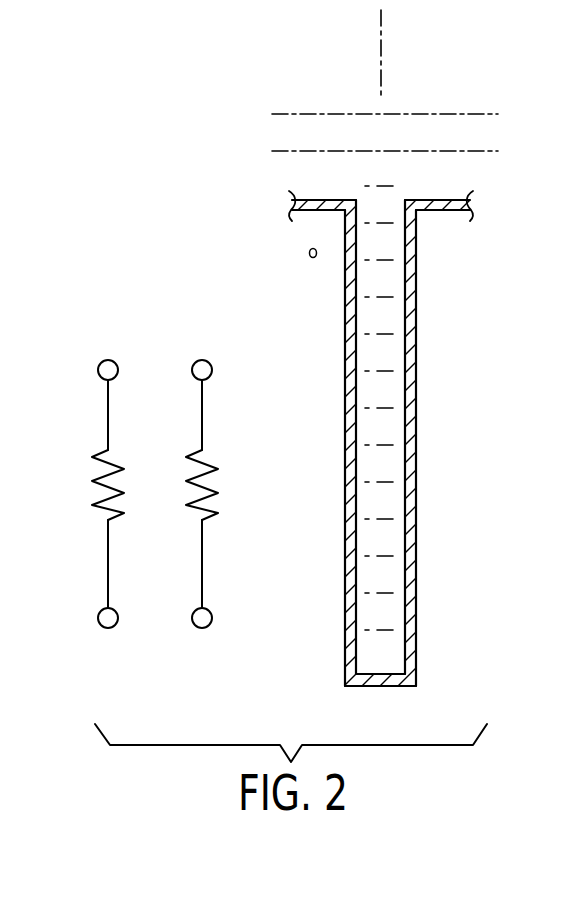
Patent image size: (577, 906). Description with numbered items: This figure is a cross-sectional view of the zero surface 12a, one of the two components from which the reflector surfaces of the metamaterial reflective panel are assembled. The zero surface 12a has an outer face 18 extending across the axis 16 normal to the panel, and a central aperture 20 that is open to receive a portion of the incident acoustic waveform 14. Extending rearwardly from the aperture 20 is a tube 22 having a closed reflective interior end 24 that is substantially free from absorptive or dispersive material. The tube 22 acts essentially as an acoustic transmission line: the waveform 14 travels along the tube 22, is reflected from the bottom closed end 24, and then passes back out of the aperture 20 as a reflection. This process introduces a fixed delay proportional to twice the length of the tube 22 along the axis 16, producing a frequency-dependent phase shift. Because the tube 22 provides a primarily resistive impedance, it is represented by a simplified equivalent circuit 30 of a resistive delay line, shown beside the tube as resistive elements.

The zero surface 12a is at (288, 434).
The acoustic waveform 14 is at (422, 114).
The axis 16 is at (380, 60).
The outer face 18 is at (330, 200).
The central aperture 20 is at (394, 193).
The tube 22 is at (345, 447).
The closed reflective interior end 24 is at (385, 686).
The equivalent circuit 30 is at (142, 648).